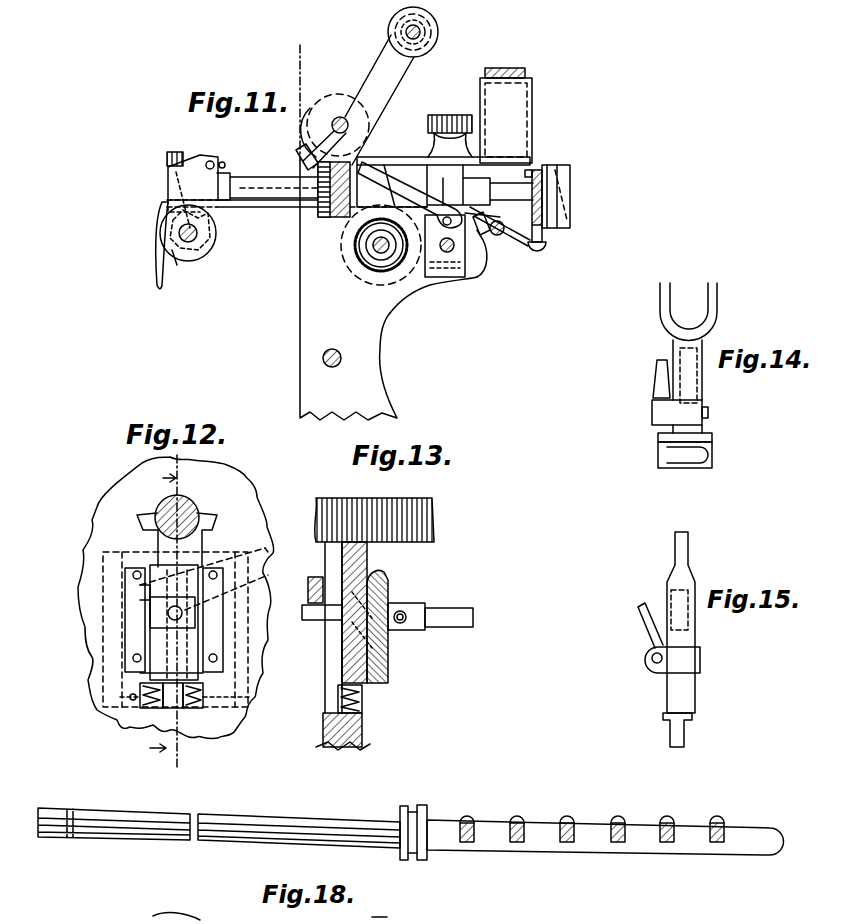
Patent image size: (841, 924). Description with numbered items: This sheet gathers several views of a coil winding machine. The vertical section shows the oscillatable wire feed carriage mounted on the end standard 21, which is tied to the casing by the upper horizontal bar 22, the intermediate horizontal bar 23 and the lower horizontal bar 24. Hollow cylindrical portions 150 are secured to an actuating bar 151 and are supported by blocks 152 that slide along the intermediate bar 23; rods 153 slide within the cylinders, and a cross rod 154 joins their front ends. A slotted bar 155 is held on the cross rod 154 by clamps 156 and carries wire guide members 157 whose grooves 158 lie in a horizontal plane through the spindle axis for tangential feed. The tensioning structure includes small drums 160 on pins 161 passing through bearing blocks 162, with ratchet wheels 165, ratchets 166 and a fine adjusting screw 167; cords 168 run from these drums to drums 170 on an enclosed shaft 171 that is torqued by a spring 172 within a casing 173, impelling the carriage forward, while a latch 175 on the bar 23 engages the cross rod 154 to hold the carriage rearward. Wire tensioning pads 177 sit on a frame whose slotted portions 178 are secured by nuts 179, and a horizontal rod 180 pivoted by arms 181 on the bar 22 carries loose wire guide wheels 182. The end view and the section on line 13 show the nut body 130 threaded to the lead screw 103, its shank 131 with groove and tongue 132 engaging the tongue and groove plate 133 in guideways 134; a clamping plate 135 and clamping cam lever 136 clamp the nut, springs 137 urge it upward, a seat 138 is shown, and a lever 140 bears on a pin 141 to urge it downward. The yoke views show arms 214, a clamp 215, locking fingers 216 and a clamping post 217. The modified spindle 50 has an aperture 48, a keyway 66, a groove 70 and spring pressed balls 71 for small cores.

In FIG. 11, the end standard 21 is at (373, 388).
In FIG. 11, the upper horizontal bar 22 is at (332, 125).
In FIG. 11, the intermediate horizontal bar 23 is at (470, 263).
In FIG. 11, the lower horizontal bar 24 is at (323, 358).
In FIG. 11, the hollow cylindrical portions 150 is at (398, 182).
In FIG. 11, the actuating bar 151 is at (337, 213).
In FIG. 11, the blocks 152 is at (443, 177).
In FIG. 11, the rods 153 is at (270, 190).
In FIG. 11, the cross rod 154 is at (496, 239).
In FIG. 11, the slotted bar 155 is at (540, 168).
In FIG. 11, the clamps 156 is at (538, 256).
In FIG. 11, the wire guide members 157 is at (548, 229).
In FIG. 11, the grooves 158 is at (573, 176).
In FIG. 11, the small drums 160 is at (193, 258).
In FIG. 11, the pins 161 is at (200, 240).
In FIG. 11, the bearing blocks 162 is at (168, 182).
In FIG. 11, the ratchet wheels 165 is at (178, 270).
In FIG. 11, the ratchets 166 is at (158, 264).
In FIG. 11, the fine adjusting screw 167 is at (167, 157).
In FIG. 11, the cords 168 is at (254, 209).
In FIG. 11, the drums 170 is at (408, 294).
In FIG. 11, the enclosed shaft 171 is at (382, 255).
In FIG. 11, the spring 172 is at (372, 270).
In FIG. 11, the casing 173 is at (446, 274).
In FIG. 11, the latch 175 is at (396, 186).
In FIG. 11, the wire tensioning pads 177 is at (523, 100).
In FIG. 11, the slotted portions 178 is at (385, 163).
In FIG. 11, the nuts 179 is at (450, 116).
In FIG. 11, the horizontally extending rod 180 is at (421, 33).
In FIG. 11, the arms 181 is at (364, 66).
In FIG. 11, the wire guide wheels 182 is at (428, 47).
In FIG. 12, the section line 13 is at (149, 612).
In FIG. 12, the lead screw 103 is at (193, 507).
In FIG. 13, the lead screw 103 is at (428, 495).
In FIG. 12, the nut body 130 is at (138, 527).
In FIG. 13, the nut body 130 is at (368, 555).
In FIG. 12, the shank 131 is at (137, 562).
In FIG. 13, the groove and tongue 132 is at (388, 587).
In FIG. 13, the tongue and groove plate 133 is at (345, 632).
In FIG. 12, the guideways 134 is at (127, 628).
In FIG. 13, the guideways 134 is at (335, 683).
In FIG. 12, the clamping plate 135 is at (193, 643).
In FIG. 13, the clamping plate 135 is at (387, 641).
In FIG. 12, the clamping cam lever 136 is at (183, 613).
In FIG. 13, the clamping cam lever 136 is at (448, 612).
In FIG. 12, the springs 137 is at (210, 733).
In FIG. 13, the springs 137 is at (364, 700).
In FIG. 12, the spring seat 138 is at (207, 686).
In FIG. 12, the lever 140 is at (266, 548).
In FIG. 13, the lever 140 is at (308, 590).
In FIG. 12, the pin 141 is at (160, 608).
In FIG. 13, the pin 141 is at (320, 613).
In FIG. 14, the arms 214 is at (706, 290).
In FIG. 15, the arms 214 is at (689, 546).
In FIG. 14, the clamp 215 is at (710, 414).
In FIG. 15, the clamp 215 is at (658, 665).
In FIG. 14, the locking fingers 216 is at (665, 455).
In FIG. 14, the clamping post 217 is at (714, 437).
In FIG. 18, the aperture 48 is at (78, 808).
In FIG. 18, the spindle 50 is at (320, 818).
In FIG. 18, the keyway 66 is at (250, 832).
In FIG. 18, the groove 70 is at (412, 856).
In FIG. 18, the spring pressed balls 71 is at (517, 815).